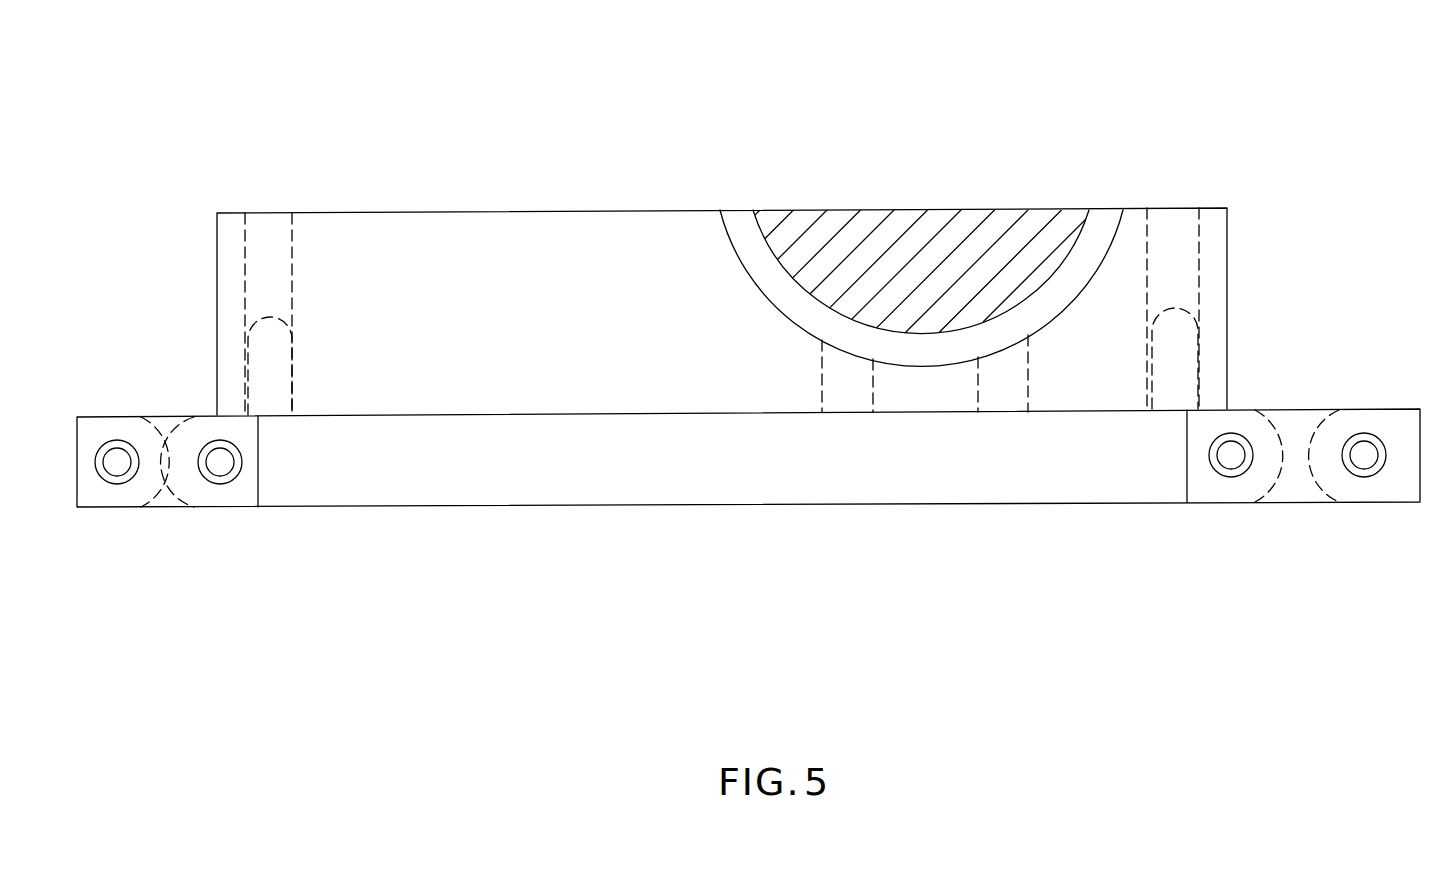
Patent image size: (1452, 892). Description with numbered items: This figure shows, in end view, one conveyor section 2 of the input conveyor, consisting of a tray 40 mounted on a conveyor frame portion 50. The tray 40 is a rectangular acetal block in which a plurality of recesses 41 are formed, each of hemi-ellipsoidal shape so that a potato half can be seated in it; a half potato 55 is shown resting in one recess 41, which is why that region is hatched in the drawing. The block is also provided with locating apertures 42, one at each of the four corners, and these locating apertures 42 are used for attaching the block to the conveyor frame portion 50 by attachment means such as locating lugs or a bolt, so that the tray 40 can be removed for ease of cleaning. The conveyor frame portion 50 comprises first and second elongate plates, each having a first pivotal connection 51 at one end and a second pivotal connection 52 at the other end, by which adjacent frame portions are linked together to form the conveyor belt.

The conveyor section 2 is at (465, 521).
The tray 40 is at (360, 232).
The recess 41 is at (773, 290).
The locating aperture 42 is at (1177, 223).
The conveyor frame portion 50 is at (598, 465).
The first pivotal connection 51 is at (223, 465).
The second pivotal connection 52 is at (1233, 453).
The half potato 55 is at (1008, 225).